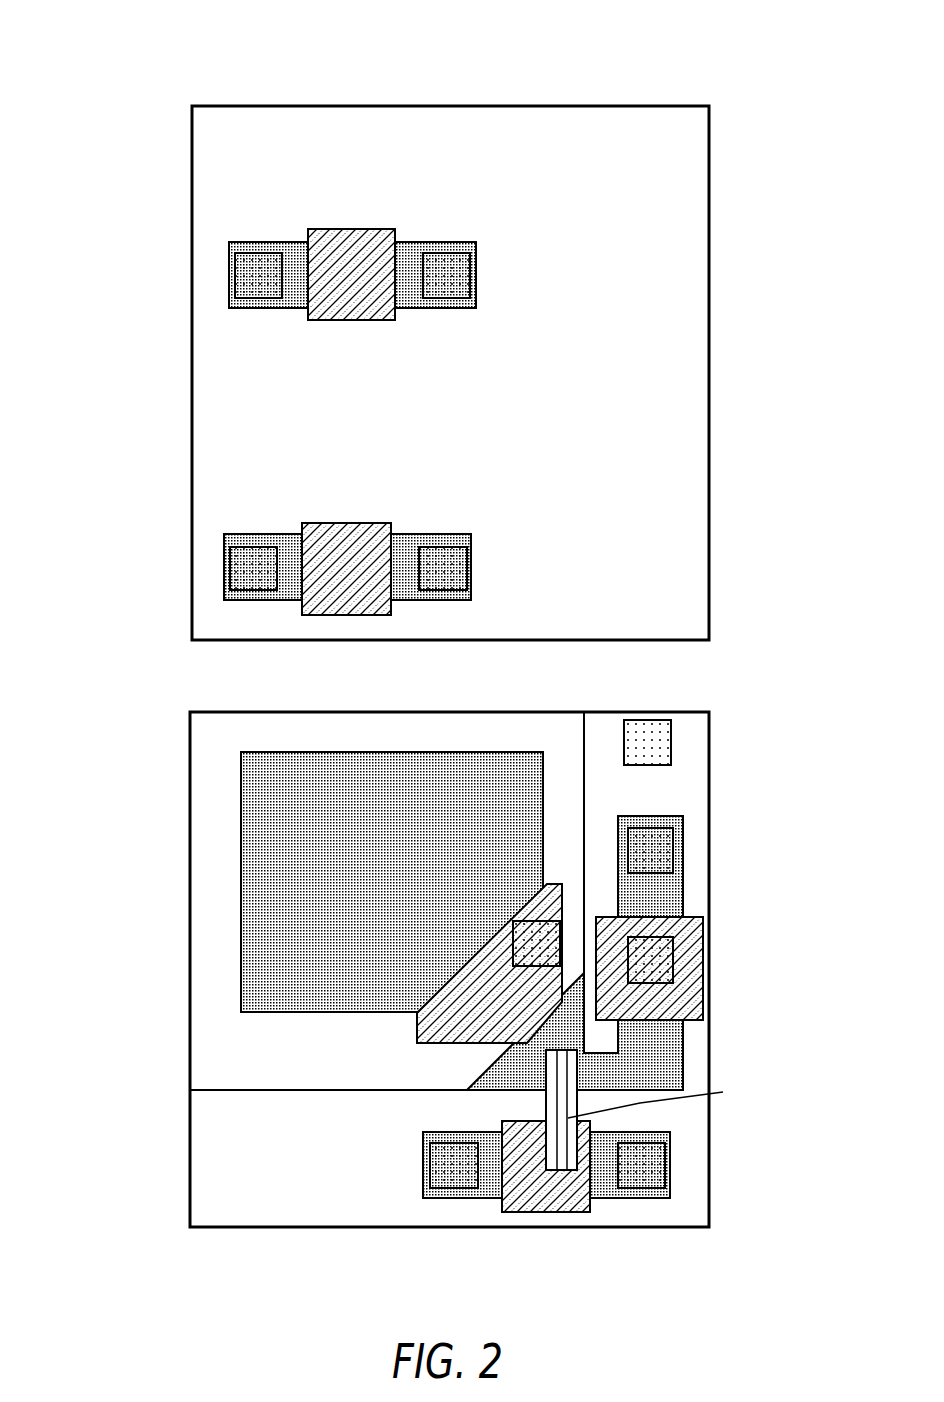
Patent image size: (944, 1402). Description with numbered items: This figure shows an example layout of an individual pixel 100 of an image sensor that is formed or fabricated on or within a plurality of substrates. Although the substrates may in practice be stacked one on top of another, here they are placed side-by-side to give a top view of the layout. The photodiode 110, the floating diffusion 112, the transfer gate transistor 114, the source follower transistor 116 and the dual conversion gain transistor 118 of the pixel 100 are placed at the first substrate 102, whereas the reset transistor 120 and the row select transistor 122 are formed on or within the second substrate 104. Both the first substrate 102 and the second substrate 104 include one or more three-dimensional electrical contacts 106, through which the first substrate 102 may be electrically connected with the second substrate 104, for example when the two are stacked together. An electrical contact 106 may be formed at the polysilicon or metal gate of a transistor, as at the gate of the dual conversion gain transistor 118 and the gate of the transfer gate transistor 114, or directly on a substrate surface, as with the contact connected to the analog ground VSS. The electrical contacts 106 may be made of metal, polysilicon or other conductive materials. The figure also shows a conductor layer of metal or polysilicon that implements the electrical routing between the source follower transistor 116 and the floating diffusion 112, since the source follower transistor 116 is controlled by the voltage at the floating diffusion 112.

The pixel 100 is at (101, 64).
The first substrate 102 is at (324, 1216).
The second substrate 104 is at (330, 137).
The 3D electrical contact 106 is at (243, 273).
The photodiode 110 is at (427, 891).
The floating diffusion 112 is at (667, 1083).
The transfer gate transistor 114 is at (510, 1028).
The source follower transistor 116 is at (578, 1201).
The dual conversion gain transistor 118 is at (693, 1013).
The reset transistor 120 is at (369, 296).
The row select transistor 122 is at (365, 588).